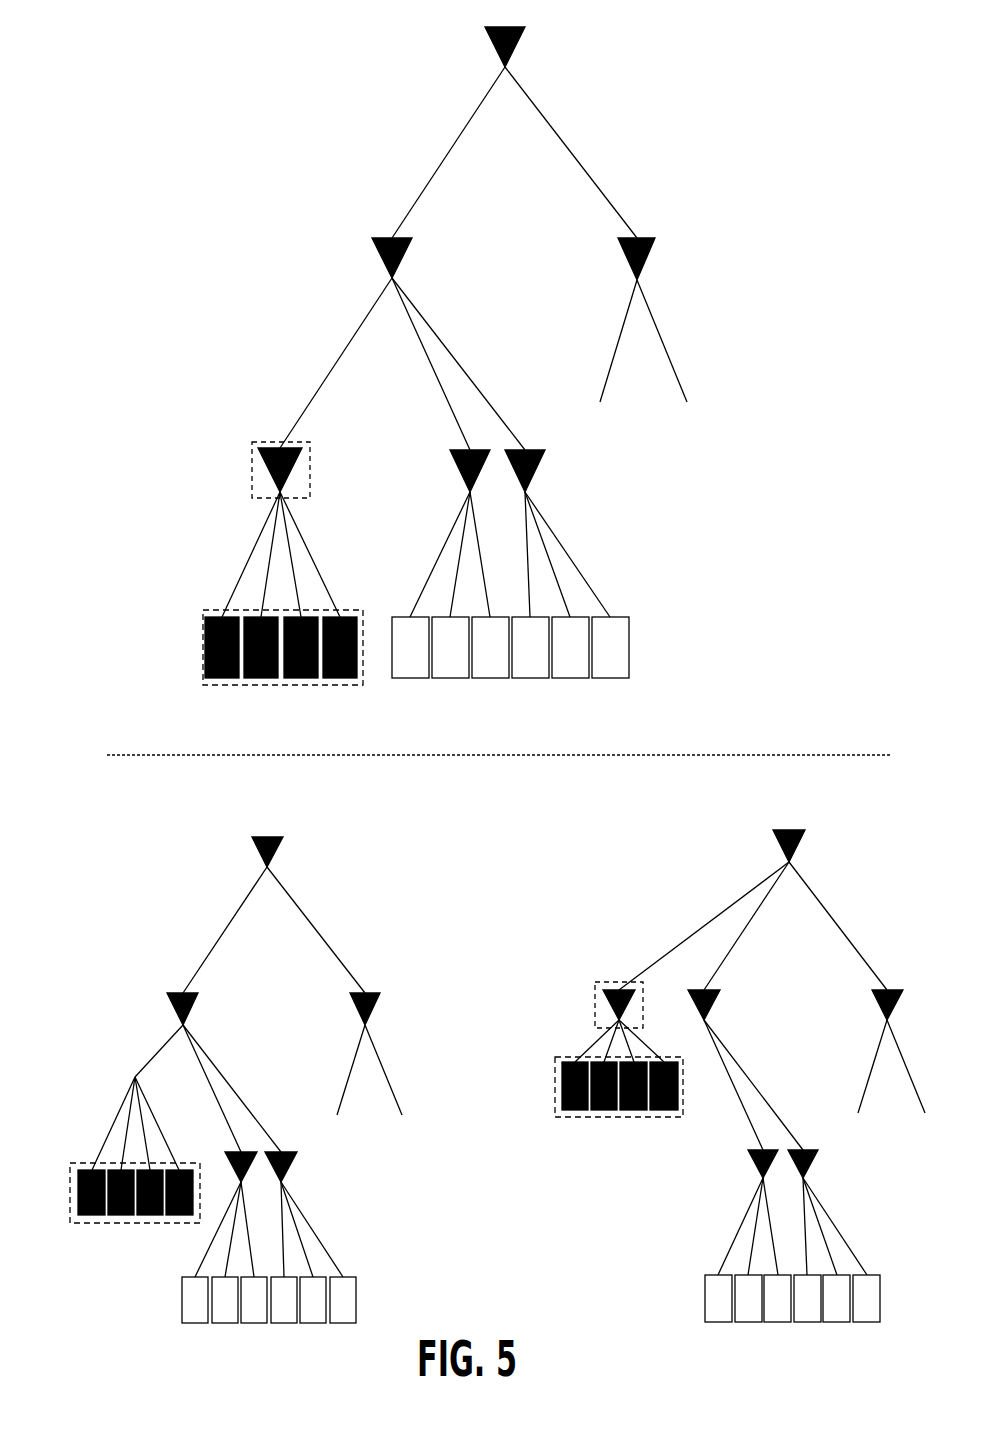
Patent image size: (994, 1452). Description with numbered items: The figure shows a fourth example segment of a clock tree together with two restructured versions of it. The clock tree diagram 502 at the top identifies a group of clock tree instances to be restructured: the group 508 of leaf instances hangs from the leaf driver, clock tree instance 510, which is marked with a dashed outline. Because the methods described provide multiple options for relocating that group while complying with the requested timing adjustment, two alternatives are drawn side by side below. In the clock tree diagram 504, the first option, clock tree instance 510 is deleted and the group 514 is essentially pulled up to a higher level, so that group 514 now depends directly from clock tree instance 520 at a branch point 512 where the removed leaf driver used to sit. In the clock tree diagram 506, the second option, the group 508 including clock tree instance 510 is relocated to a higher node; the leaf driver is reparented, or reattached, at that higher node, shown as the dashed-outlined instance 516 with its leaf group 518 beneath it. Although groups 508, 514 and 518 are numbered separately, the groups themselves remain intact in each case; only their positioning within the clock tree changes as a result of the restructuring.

The clock tree diagram 502 is at (288, 15).
The clock tree diagram 504 is at (166, 817).
The clock tree diagram 506 is at (674, 817).
The group 508 is at (205, 650).
The clock tree instance 510 is at (257, 447).
The branch point replacing removed internal node 512 is at (135, 1077).
The group 514 is at (100, 1223).
The internal node marked for deletion 516 is at (603, 996).
The group 518 is at (598, 1117).
The clock tree instance 520 is at (167, 997).